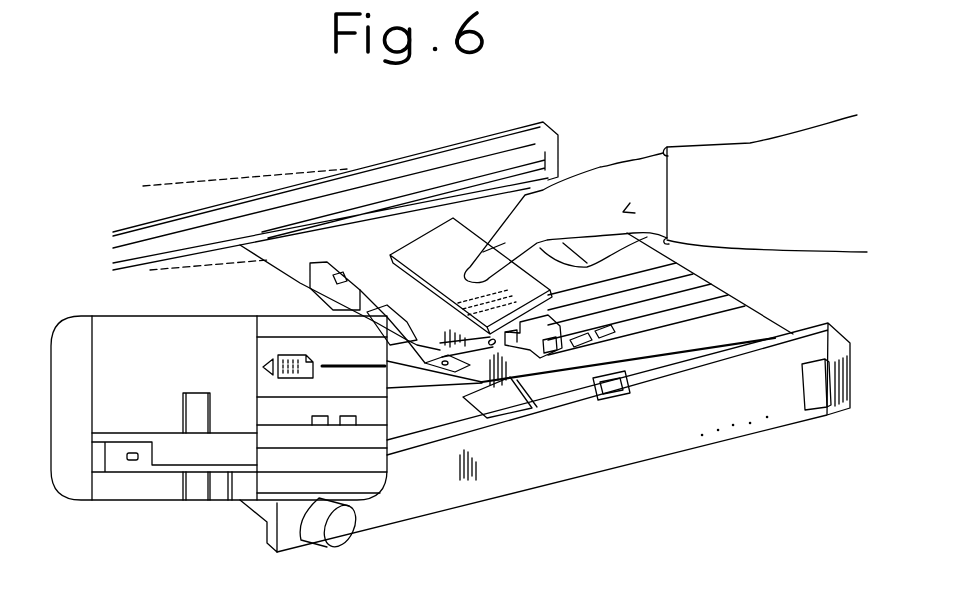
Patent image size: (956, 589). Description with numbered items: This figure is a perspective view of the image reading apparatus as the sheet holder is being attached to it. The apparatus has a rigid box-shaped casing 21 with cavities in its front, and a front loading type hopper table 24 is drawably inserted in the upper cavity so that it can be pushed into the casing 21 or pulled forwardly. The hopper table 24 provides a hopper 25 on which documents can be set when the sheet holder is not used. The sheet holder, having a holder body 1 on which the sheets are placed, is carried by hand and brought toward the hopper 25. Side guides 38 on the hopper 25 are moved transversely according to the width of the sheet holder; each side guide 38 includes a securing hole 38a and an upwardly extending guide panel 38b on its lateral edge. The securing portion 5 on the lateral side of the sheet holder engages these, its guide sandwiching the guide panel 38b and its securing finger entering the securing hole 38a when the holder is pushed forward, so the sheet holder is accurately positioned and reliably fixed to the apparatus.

The holder body 1 is at (446, 268).
The casing 21 is at (543, 122).
The hopper table 24 is at (753, 410).
The hopper 25 is at (113, 337).
The securing portion 5 is at (550, 343).
The side guide 38 is at (155, 473).
The securing hole 38a is at (132, 462).
The guide panel 38b is at (232, 475).